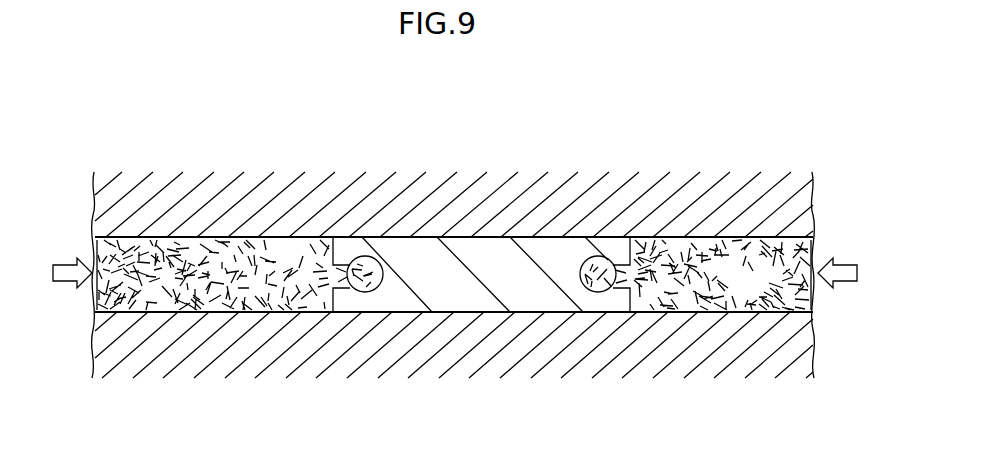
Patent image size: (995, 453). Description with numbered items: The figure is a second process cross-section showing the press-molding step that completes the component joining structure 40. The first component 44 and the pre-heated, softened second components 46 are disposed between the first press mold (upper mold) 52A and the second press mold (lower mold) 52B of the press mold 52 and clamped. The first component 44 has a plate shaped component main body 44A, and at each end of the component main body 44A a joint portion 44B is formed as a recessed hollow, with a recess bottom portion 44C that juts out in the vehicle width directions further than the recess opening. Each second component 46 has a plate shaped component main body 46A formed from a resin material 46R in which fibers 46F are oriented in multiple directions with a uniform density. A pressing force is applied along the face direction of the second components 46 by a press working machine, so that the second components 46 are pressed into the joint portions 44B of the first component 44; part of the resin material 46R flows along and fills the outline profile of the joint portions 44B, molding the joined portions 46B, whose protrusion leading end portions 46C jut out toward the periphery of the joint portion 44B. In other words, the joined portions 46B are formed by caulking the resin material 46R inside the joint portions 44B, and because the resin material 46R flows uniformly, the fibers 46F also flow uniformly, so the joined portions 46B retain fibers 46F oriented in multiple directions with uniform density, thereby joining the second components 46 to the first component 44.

The component joining structure 40 is at (581, 216).
The first component 44 is at (483, 261).
The component main body 44A is at (446, 286).
The joint portion 44B is at (622, 268).
The recess bottom portion 44C is at (606, 258).
The second component 46 is at (89, 254).
The component main body 46A is at (748, 260).
The joined portion 46B is at (350, 262).
The protrusion leading end portion 46C is at (363, 257).
The fibers 46F is at (92, 304).
The resin material 46R is at (150, 298).
The press mold 52 is at (268, 102).
The first press mold (upper mold) 52A is at (267, 210).
The second press mold (lower mold) 52B is at (238, 362).